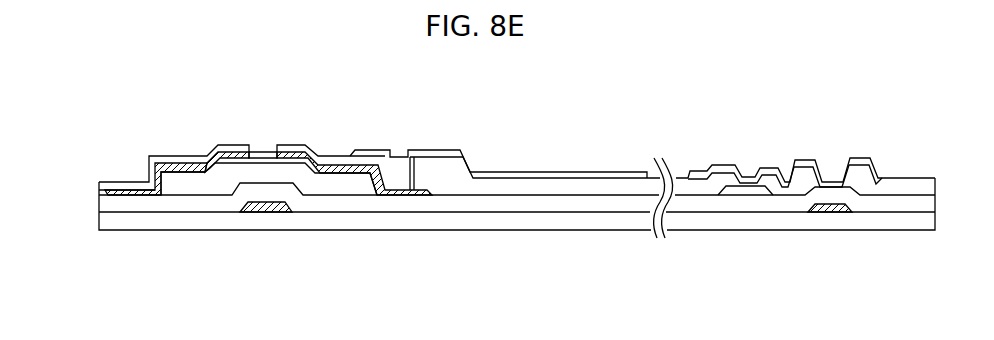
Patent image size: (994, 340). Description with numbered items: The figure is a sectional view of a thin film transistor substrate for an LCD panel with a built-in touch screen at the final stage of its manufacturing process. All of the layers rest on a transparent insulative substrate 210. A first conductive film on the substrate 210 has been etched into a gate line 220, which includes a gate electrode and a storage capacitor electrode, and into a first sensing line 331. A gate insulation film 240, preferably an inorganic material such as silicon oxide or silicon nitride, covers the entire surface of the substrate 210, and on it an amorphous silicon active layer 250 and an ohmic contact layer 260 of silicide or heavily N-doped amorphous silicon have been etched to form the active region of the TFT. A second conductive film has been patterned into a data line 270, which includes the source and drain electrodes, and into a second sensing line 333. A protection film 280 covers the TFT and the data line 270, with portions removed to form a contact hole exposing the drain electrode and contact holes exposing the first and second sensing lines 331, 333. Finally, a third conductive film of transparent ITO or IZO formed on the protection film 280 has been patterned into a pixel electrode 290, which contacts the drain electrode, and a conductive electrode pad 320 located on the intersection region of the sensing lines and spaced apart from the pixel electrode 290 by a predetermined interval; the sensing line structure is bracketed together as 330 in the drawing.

The transparent insulative substrate 210 is at (456, 226).
The gate line 220 is at (266, 214).
The gate insulation film 240 is at (100, 200).
The active layer 250 is at (190, 183).
The ohmic contact layer 260 is at (213, 162).
The data line 270 is at (148, 166).
The protection film 280 is at (253, 145).
The pixel electrode 290 is at (536, 171).
The conductive electrode pad 320 is at (860, 157).
The capacitor 330 is at (785, 248).
The first sensing line 331 is at (828, 241).
The second sensing line 333 is at (751, 188).